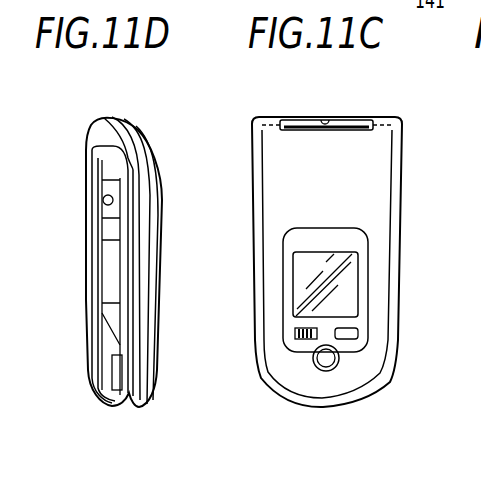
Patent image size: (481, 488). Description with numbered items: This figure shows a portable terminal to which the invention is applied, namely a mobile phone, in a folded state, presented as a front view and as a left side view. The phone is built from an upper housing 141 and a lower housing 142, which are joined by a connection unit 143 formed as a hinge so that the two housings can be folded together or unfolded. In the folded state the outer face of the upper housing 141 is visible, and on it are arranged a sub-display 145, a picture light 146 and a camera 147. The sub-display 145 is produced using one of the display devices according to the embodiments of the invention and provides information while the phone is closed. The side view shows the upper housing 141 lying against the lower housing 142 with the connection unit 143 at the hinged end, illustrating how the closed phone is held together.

In FIG. 11D, the upper housing 141 is at (126, 121).
In FIG. 11C, the upper housing 141 is at (382, 148).
In FIG. 11D, the lower housing 142 is at (93, 372).
In FIG. 11C, the connection unit 143 is at (304, 118).
In FIG. 11C, the sub-display 145 is at (350, 300).
In FIG. 11C, the picture light 146 is at (296, 334).
In FIG. 11C, the camera 147 is at (335, 368).